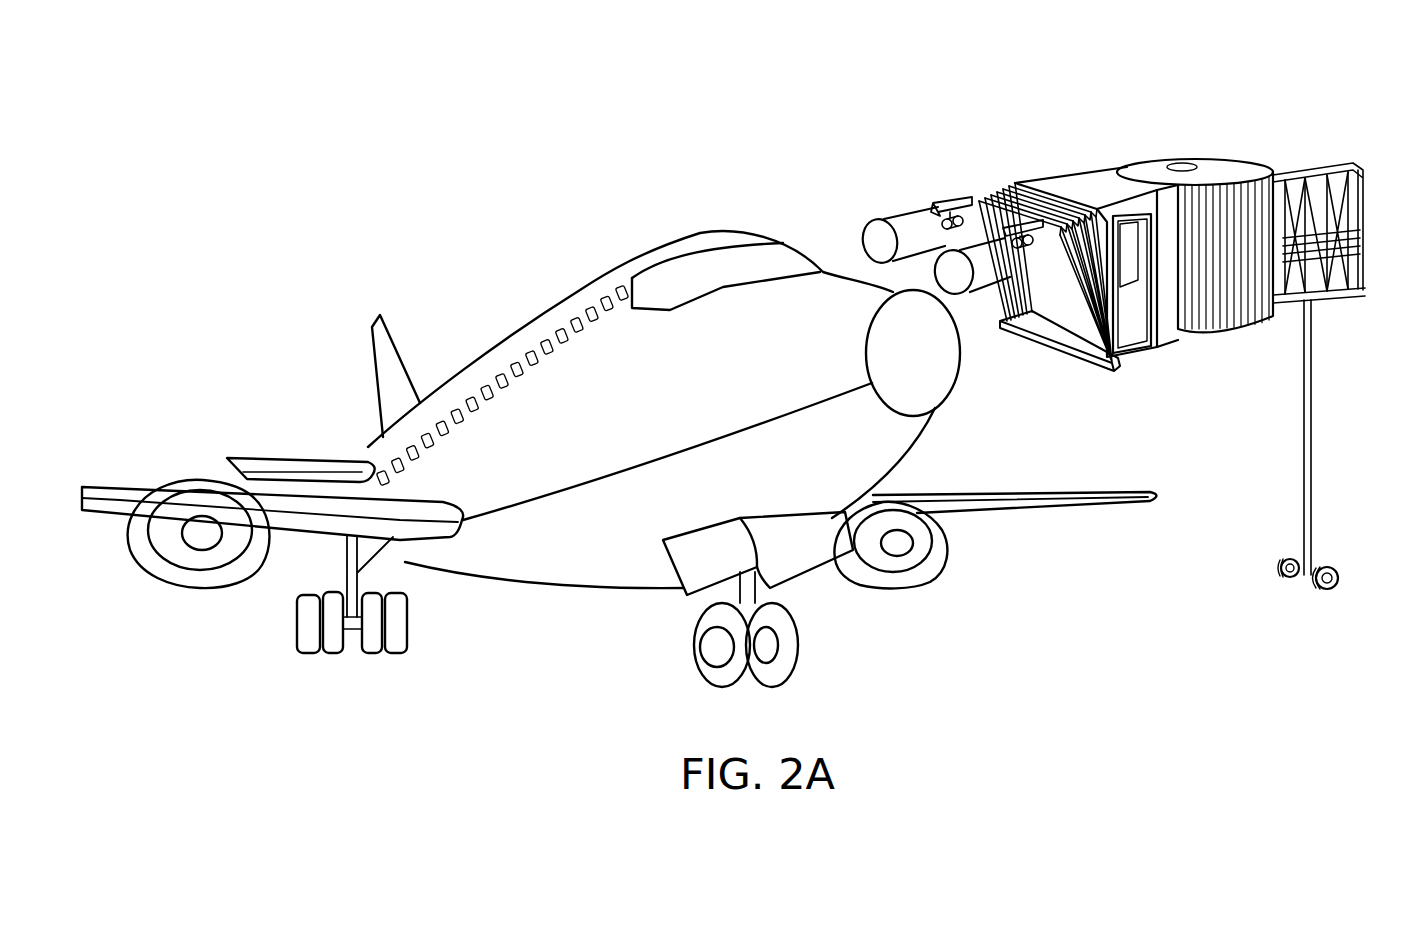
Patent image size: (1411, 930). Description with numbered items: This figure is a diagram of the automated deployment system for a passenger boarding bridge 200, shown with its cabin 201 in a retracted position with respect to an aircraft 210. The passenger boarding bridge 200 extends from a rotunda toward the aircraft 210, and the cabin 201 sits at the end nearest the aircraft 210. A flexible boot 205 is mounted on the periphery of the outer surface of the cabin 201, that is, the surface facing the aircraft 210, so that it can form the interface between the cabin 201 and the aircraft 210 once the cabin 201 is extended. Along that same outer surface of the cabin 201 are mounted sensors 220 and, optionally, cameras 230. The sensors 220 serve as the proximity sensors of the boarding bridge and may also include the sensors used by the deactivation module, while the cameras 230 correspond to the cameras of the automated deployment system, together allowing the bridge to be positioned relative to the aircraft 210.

The passenger boarding bridge 200 is at (1091, 321).
The cabin 201 is at (1050, 185).
The flexible boot 205 is at (987, 192).
The aircraft 210 is at (647, 248).
The sensors 220 is at (952, 198).
The cameras 230 is at (1017, 231).